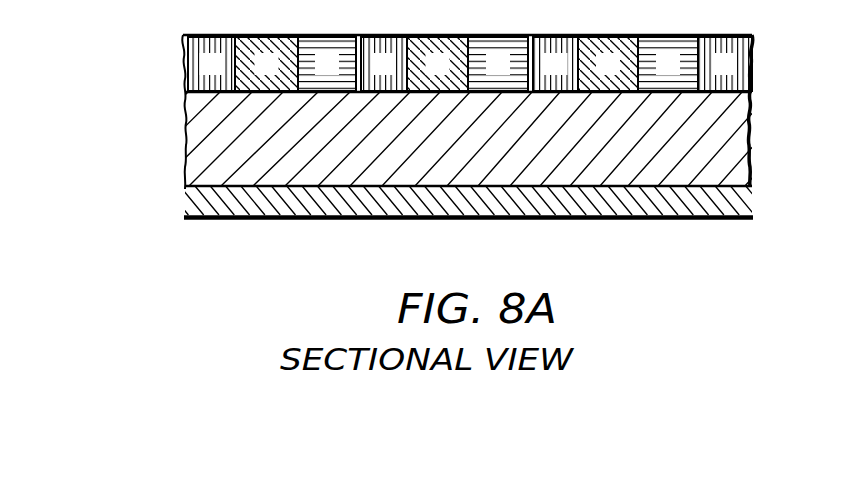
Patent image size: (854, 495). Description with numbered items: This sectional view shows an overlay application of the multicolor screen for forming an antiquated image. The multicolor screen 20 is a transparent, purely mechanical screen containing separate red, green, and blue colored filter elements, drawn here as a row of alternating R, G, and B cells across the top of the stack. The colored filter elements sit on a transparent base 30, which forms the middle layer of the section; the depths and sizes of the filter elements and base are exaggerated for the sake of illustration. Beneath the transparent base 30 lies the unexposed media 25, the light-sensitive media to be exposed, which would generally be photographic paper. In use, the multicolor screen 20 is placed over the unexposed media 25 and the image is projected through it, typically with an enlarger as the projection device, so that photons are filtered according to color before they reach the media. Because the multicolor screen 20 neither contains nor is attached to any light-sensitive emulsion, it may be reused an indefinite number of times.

The multicolor screen 20 is at (181, 55).
The transparent base 30 is at (184, 130).
The unexposed media 25 is at (185, 198).